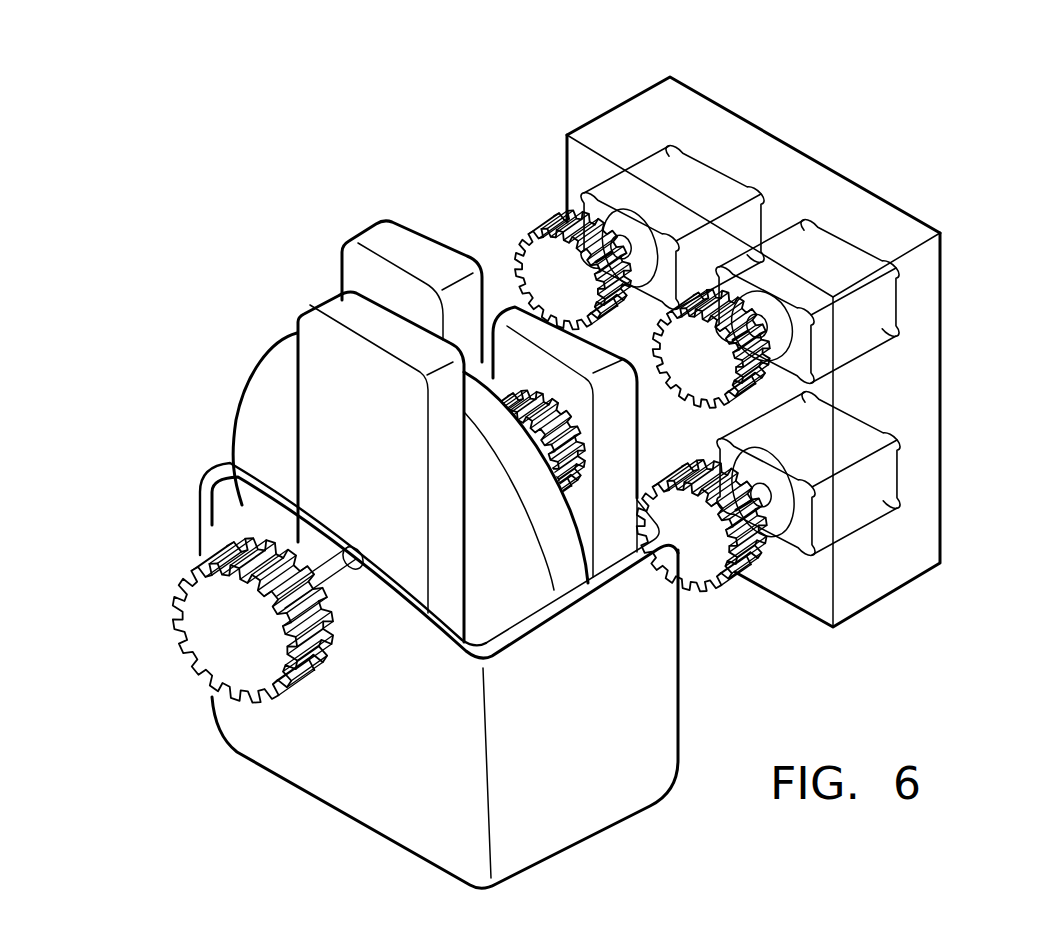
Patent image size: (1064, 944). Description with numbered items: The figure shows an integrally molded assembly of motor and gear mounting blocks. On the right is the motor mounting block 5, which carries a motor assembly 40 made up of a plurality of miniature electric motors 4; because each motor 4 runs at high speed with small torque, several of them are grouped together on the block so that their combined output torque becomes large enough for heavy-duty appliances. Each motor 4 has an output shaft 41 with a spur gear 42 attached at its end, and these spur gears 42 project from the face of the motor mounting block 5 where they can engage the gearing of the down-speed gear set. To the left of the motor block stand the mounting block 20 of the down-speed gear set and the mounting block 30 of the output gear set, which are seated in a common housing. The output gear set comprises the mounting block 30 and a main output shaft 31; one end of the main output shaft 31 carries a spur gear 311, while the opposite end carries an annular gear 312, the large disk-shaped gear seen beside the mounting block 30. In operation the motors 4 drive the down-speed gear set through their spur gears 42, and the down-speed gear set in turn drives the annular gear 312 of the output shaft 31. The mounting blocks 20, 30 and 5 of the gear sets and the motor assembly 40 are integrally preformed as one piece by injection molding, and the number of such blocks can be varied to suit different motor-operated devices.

The miniature electric motor 4 is at (810, 438).
The motor mounting block 5 is at (657, 113).
The mounting block 20 is at (400, 237).
The mounting block 30 is at (333, 307).
The main output shaft 31 is at (340, 586).
The motor assembly 40 is at (751, 322).
The output shaft 41 is at (582, 208).
The spur gear 42 is at (540, 283).
The spur gear 311 is at (258, 677).
The annular gear 312 is at (253, 417).